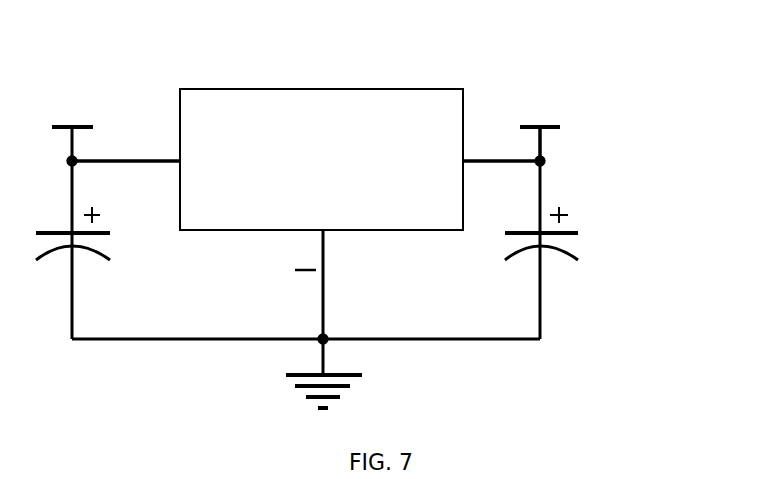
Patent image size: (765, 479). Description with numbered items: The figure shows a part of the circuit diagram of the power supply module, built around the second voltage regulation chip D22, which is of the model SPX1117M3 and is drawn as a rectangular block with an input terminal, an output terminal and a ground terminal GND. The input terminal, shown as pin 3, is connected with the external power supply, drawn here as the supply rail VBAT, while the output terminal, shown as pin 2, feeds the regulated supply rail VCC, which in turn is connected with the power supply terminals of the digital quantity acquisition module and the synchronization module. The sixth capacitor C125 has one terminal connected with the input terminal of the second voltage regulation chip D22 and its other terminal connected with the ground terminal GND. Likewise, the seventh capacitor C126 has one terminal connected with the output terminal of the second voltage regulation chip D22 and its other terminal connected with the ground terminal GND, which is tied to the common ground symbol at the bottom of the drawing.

The second voltage regulation chip D22 is at (321, 146).
The sixth capacitor C125 is at (118, 235).
The seventh capacitor C126 is at (608, 239).
The VIN pin 3 is at (126, 147).
The VOUT pin 2 is at (501, 149).
The battery voltage input VBAT is at (73, 127).
The regulated output voltage VCC is at (538, 127).
The ground terminal GND is at (324, 391).